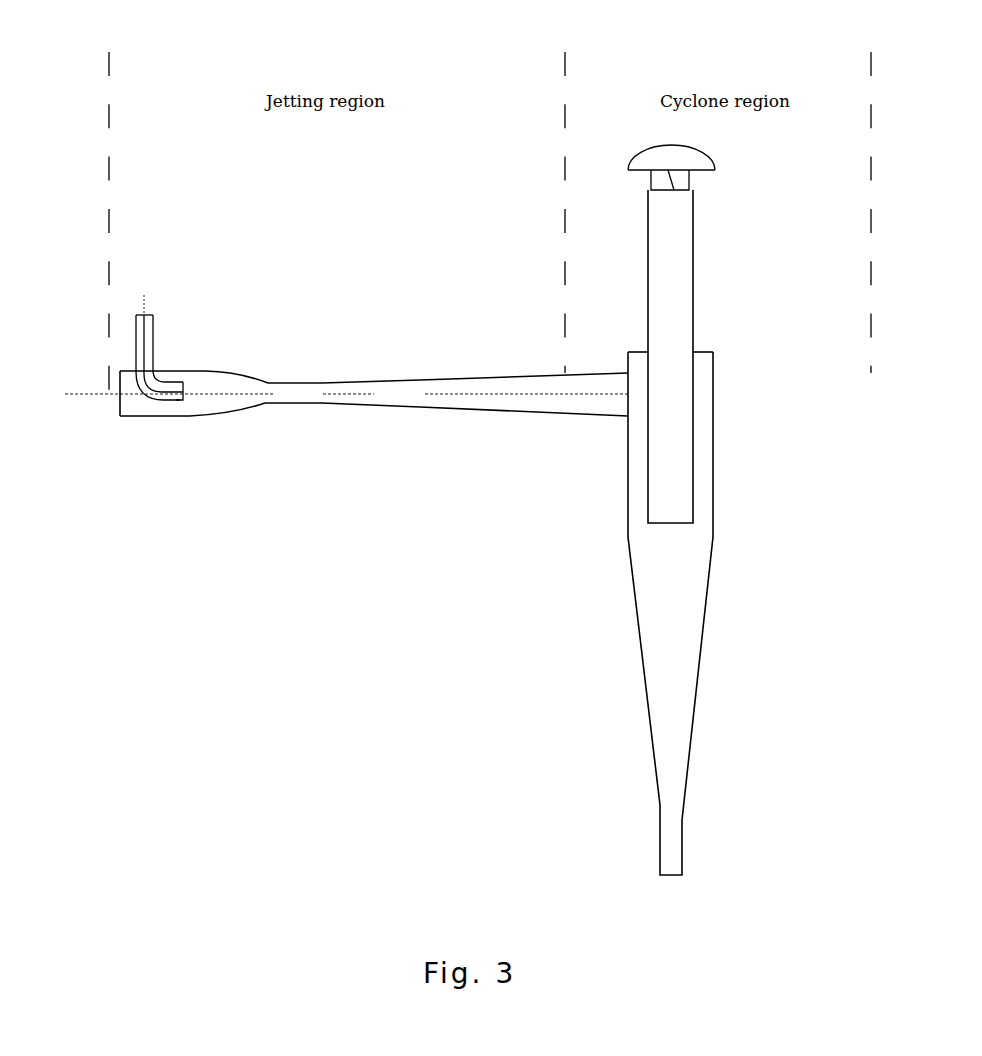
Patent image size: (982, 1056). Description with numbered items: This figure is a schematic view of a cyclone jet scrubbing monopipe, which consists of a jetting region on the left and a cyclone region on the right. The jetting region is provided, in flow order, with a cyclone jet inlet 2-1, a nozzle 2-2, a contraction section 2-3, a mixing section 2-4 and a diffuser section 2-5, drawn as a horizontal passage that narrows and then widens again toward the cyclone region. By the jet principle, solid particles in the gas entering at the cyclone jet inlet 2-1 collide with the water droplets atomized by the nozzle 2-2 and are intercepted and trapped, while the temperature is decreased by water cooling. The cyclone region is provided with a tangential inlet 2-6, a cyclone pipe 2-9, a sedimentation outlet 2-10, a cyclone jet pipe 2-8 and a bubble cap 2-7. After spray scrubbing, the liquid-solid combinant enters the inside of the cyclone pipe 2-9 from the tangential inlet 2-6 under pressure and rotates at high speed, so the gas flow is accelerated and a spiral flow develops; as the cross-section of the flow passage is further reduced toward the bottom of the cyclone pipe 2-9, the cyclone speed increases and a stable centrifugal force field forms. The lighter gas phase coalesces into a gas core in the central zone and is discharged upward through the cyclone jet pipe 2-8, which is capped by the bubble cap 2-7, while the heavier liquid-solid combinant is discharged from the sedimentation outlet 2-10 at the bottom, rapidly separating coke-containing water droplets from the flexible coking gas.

The cyclone jet inlet 2-1 is at (120, 398).
The nozzle 2-2 is at (183, 398).
The contraction section 2-3 is at (240, 407).
The mixing section 2-4 is at (308, 404).
The diffuser section 2-5 is at (441, 410).
The tangential inlet 2-6 is at (602, 418).
The bubble cap 2-7 is at (715, 170).
The cyclone jet pipe 2-8 is at (695, 262).
The cyclone pipe 2-9 is at (710, 600).
The sedimentation outlet 2-10 is at (682, 825).